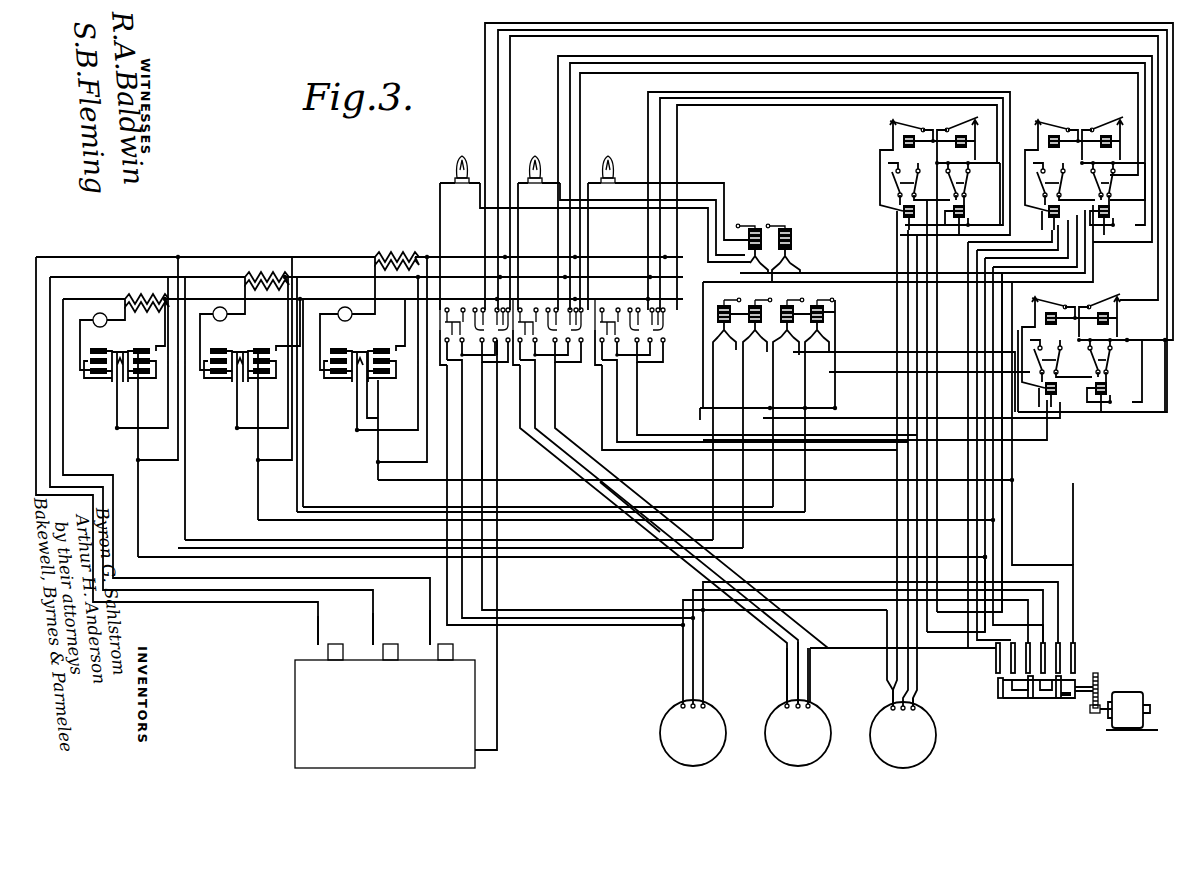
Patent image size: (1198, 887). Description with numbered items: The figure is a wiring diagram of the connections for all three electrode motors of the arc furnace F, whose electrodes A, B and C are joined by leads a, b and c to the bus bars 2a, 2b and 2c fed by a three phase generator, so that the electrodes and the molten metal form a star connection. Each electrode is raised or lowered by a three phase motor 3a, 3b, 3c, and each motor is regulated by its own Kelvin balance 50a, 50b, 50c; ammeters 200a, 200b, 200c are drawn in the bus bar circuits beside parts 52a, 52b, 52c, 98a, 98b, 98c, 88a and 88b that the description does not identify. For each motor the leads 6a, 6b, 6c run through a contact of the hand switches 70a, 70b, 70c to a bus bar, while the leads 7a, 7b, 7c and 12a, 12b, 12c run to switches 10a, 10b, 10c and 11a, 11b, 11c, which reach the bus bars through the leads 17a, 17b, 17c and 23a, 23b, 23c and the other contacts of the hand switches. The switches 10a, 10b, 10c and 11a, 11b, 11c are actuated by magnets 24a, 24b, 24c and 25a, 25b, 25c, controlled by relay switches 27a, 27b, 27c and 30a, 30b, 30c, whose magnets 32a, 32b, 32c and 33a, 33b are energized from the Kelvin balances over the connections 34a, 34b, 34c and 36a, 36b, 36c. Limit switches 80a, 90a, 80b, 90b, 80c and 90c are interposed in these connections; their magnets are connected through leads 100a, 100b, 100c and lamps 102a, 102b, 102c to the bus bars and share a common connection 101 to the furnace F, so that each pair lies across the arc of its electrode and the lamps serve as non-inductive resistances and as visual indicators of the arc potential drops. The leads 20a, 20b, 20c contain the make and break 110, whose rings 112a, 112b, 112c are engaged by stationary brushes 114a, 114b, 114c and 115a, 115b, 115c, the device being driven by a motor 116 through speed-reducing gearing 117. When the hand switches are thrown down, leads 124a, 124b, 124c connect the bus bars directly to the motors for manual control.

The bus bar 2a is at (205, 255).
The bus bar 2b is at (205, 276).
The bus bar 2c is at (205, 298).
The resistor 52a is at (397, 254).
The resistor 52b is at (267, 274).
The resistor 52c is at (147, 295).
The ammeter 200a is at (338, 317).
The ammeter 200b is at (211, 327).
The ammeter 200c is at (95, 336).
The Kelvin balance 50a is at (357, 345).
The Kelvin balance 50b is at (232, 345).
The Kelvin balance 50c is at (104, 350).
The lead 34a is at (386, 348).
The lead 34b is at (258, 348).
The lead 34c is at (134, 348).
The lead 36a is at (394, 382).
The lead 36b is at (271, 386).
The lead 36c is at (146, 386).
The motor lead 6a is at (648, 115).
The motor lead 6b is at (558, 115).
The motor lead 6c is at (485, 115).
The lead 17a is at (677, 120).
The lead 17b is at (570, 97).
The lead 17c is at (498, 90).
The lead 23a is at (660, 138).
The lead 23b is at (570, 128).
The lead 23c is at (498, 128).
The lamp 102a is at (610, 162).
The lamp 102b is at (537, 162).
The lamp 102c is at (462, 162).
The lead 100a is at (705, 180).
The lead 100b is at (716, 200).
The lead 100c is at (708, 213).
The double throw three pole hand switch 70a is at (661, 334).
The double throw three pole hand switch 70b is at (575, 338).
The double throw three pole hand switch 70c is at (500, 338).
The lead 124a is at (673, 447).
The lead 124b is at (630, 495).
The lead 124c is at (482, 468).
The relay coil 98a is at (748, 240).
The relay coil 98b is at (787, 305).
The relay coil 98c is at (724, 305).
The relay coil 88a is at (792, 240).
The relay coil 88b is at (835, 312).
The voltage limit switch 90a is at (748, 255).
The voltage limit switch 90b is at (792, 340).
The voltage limit switch 90c is at (727, 340).
The voltage limit switch 80a is at (792, 257).
The voltage limit switch 80b is at (828, 333).
The voltage limit switch 80c is at (757, 340).
The common connection 101 is at (497, 648).
The magnet 33a is at (890, 141).
The magnet 33b is at (1036, 141).
The magnet 32a is at (967, 142).
The magnet 32b is at (1112, 145).
The magnet 32c is at (1110, 319).
The relay switch 30a is at (905, 126).
The relay switch 30b is at (1049, 126).
The relay switch 30c is at (1045, 303).
The relay switch 27a is at (955, 125).
The relay switch 27b is at (1101, 124).
The relay switch 27c is at (1104, 300).
The switch 11a is at (893, 184).
The switch 11b is at (1044, 192).
The switch 11c is at (1035, 362).
The switch 10a is at (968, 186).
The switch 10b is at (1113, 186).
The switch 10c is at (1110, 363).
The magnet 25a is at (903, 214).
The magnet 25b is at (1048, 216).
The magnet 25c is at (1045, 393).
The magnet 24a is at (966, 211).
The magnet 24b is at (1111, 211).
The magnet 24c is at (1108, 388).
The lead 20a is at (942, 483).
The lead 20b is at (1000, 483).
The lead 20c is at (1073, 590).
The motor lead 7a is at (887, 676).
The motor lead 7b is at (787, 688).
The motor lead 7c is at (683, 680).
The motor lead 12a is at (913, 693).
The motor lead 12b is at (798, 686).
The motor lead 12c is at (693, 675).
The three phase electric motor 3a is at (905, 766).
The three phase electric motor 3b is at (798, 766).
The three phase electric motor 3c is at (693, 766).
The stationary brush 114a is at (996, 660).
The stationary brush 114b is at (1030, 645).
The stationary brush 114c is at (1060, 648).
The stationary brush 115a is at (1011, 668).
The stationary brush 115b is at (1045, 646).
The stationary brush 115c is at (1075, 652).
The ring 112a is at (1000, 690).
The ring 112b is at (1038, 698).
The ring 112c is at (1062, 700).
The make and break 110 is at (1019, 698).
The motor 116 is at (1127, 698).
The speed-reducing gearing 117 is at (1097, 680).
The electric furnace F is at (385, 714).
The electrode A is at (336, 648).
The electrode B is at (391, 648).
The electrode C is at (446, 648).
The lead a is at (318, 616).
The lead b is at (373, 613).
The lead c is at (430, 610).